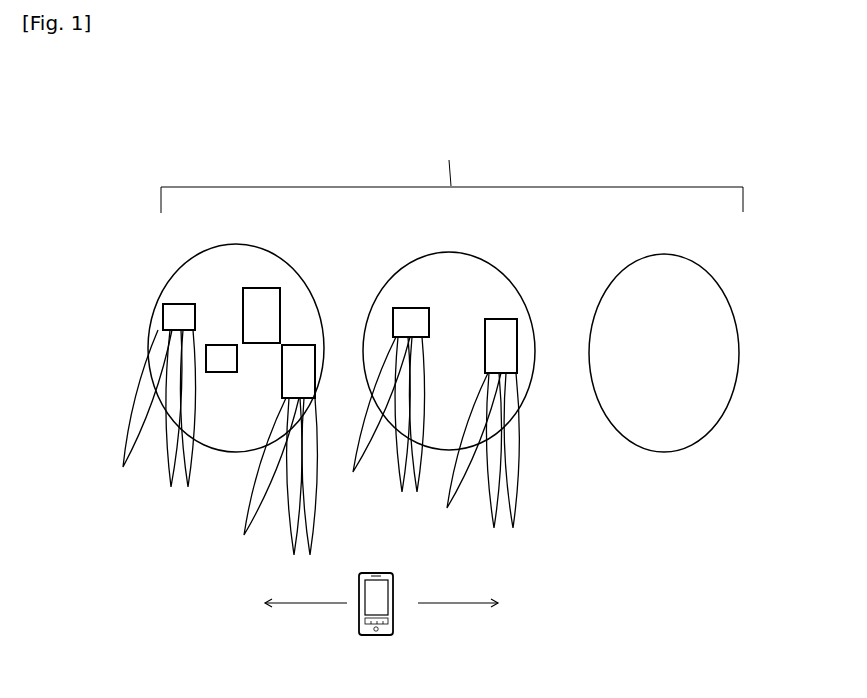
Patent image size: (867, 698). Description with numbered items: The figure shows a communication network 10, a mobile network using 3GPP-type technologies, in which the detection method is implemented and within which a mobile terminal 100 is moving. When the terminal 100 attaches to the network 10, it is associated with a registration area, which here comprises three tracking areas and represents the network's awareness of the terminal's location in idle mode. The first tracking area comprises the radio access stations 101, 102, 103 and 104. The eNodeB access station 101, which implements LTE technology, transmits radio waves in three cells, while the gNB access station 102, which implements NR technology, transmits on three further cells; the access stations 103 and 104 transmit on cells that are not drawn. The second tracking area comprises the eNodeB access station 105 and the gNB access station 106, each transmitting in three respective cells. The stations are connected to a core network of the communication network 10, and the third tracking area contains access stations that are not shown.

The communication network 10 is at (123, 212).
The mobile terminal 100 is at (393, 618).
The eNodeB access station 101 is at (157, 403).
The gNB access station 102 is at (277, 459).
The access station 103 is at (221, 358).
The access station 104 is at (261, 315).
The eNodeB radio access station 105 is at (387, 407).
The gNB access station 106 is at (487, 433).